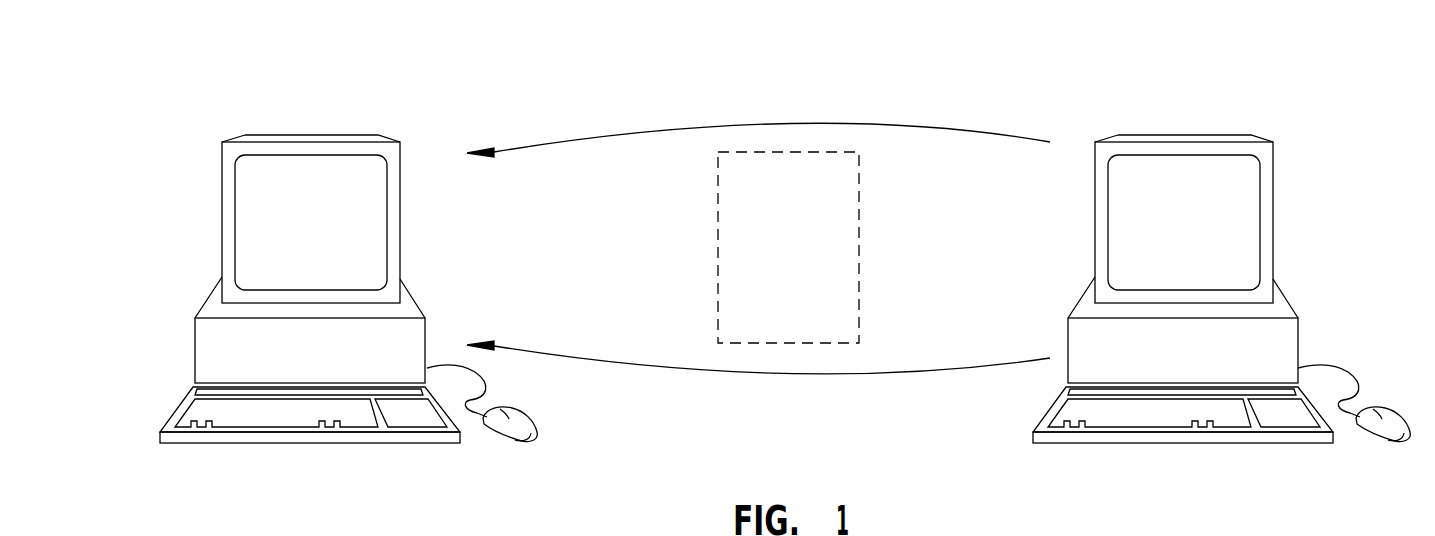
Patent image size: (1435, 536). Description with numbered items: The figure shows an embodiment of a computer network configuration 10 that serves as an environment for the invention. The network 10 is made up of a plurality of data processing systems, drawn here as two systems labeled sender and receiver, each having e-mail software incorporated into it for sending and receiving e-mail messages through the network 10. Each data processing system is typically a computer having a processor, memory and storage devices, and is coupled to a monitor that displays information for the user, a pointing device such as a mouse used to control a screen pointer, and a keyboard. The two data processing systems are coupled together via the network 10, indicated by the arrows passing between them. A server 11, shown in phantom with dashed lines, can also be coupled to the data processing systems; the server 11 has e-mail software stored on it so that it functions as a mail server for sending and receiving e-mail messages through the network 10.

The computer network configuration 10 is at (798, 72).
The server 11 is at (718, 203).